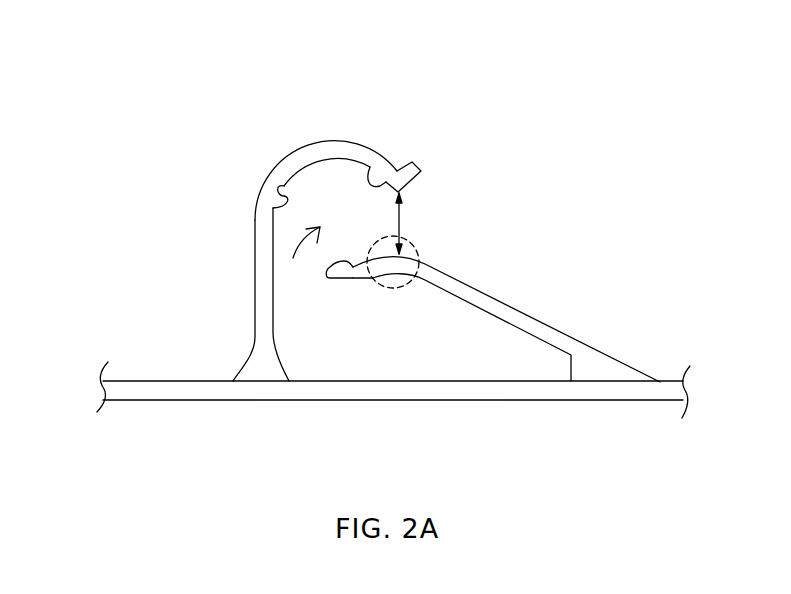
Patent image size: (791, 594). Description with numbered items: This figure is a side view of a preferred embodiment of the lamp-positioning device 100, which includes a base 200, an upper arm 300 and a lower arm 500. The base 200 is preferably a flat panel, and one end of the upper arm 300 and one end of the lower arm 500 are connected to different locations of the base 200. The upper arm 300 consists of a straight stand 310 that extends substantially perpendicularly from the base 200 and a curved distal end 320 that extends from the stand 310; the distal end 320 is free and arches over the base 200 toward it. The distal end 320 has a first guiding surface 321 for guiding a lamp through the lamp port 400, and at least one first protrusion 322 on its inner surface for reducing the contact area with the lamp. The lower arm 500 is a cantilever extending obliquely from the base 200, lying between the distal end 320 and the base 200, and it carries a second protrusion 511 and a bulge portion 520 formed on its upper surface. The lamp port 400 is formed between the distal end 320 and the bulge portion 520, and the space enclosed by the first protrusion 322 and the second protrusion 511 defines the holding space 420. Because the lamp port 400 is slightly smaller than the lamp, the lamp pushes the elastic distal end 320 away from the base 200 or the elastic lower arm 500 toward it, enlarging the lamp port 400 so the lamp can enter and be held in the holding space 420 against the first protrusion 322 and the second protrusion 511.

The lamp-positioning device 100 is at (136, 38).
The base 200 is at (578, 393).
The upper arm 300 is at (215, 98).
The stand 310 is at (256, 290).
The distal end 320 is at (305, 153).
The first guiding surface 321 is at (399, 172).
The first protrusion 322 is at (375, 173).
The lamp port 400 is at (382, 223).
The holding space 420 is at (293, 262).
The lower arm 500 is at (528, 318).
The second protrusion 511 is at (346, 265).
The bulge portion 520 is at (418, 250).